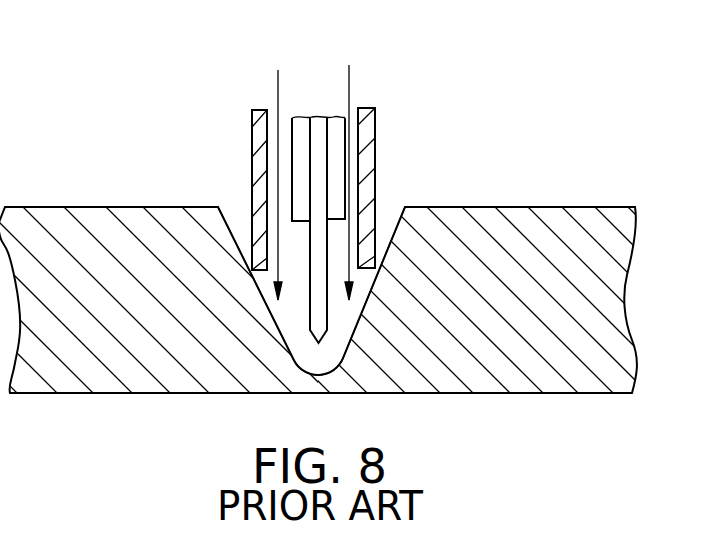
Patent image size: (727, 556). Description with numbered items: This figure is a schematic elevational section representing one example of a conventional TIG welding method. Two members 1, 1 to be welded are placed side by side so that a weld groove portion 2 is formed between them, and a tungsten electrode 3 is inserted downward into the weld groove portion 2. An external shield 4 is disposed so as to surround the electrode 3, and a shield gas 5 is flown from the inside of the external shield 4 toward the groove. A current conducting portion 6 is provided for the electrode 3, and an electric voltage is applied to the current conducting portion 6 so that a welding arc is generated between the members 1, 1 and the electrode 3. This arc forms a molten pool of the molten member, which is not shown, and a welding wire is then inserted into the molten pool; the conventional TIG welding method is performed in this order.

The members to be welded 1 is at (50, 207).
The weld groove portion 2 is at (233, 232).
The tungsten electrode 3 is at (327, 323).
The external shield 4 is at (375, 158).
The shield gas 5 is at (278, 88).
The current conducting portion 6 is at (337, 118).